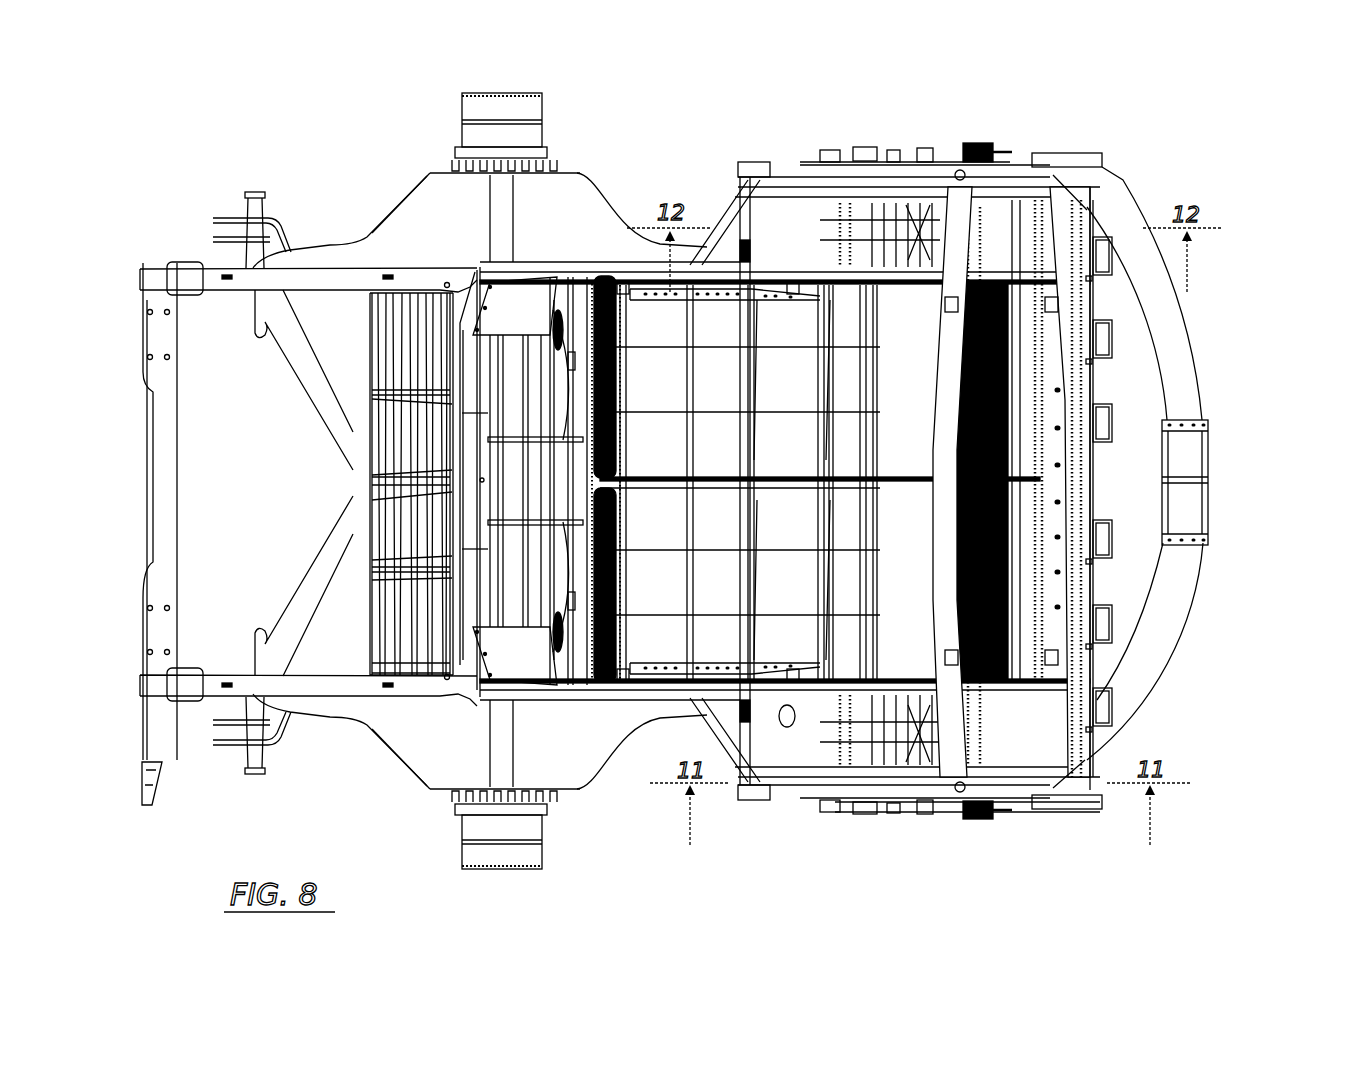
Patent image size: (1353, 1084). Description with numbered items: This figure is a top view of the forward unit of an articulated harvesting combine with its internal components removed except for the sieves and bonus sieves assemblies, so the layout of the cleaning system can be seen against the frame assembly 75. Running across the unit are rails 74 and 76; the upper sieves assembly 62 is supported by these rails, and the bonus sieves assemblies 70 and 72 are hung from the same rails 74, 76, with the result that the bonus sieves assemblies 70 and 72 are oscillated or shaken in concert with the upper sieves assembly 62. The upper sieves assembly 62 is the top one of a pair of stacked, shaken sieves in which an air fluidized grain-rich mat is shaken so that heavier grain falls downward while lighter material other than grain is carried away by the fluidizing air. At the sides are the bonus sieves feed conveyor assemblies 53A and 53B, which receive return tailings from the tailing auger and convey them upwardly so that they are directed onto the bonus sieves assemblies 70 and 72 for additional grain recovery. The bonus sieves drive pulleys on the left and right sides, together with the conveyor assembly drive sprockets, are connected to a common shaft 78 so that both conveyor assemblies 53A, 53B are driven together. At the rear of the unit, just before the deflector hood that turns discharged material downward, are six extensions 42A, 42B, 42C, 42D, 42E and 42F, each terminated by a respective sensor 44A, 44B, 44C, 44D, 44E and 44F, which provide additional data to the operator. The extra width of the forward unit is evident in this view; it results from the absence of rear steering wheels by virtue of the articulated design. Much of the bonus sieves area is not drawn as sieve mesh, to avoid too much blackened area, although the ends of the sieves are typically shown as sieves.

The extension 42A is at (1103, 728).
The extension 42B is at (1103, 645).
The extension 42C is at (1103, 562).
The extension 42D is at (1103, 443).
The extension 42E is at (1102, 362).
The extension 42F is at (1102, 283).
The sensor 44A is at (1103, 708).
The sensor 44B is at (1106, 626).
The sensor 44C is at (1104, 540).
The sensor 44D is at (1105, 423).
The sensor 44E is at (1106, 340).
The sensor 44F is at (1102, 248).
The bonus sieves feed conveyor assembly 53A is at (874, 812).
The bonus sieves feed conveyor assembly 53B is at (876, 148).
The upper sieves assembly 62 is at (604, 284).
The bonus sieves assembly 70 is at (892, 762).
The bonus sieves assembly 72 is at (900, 222).
The rail 74 is at (811, 692).
The frame assembly 75 is at (170, 478).
The rail 76 is at (808, 272).
The shaft 78 is at (864, 385).